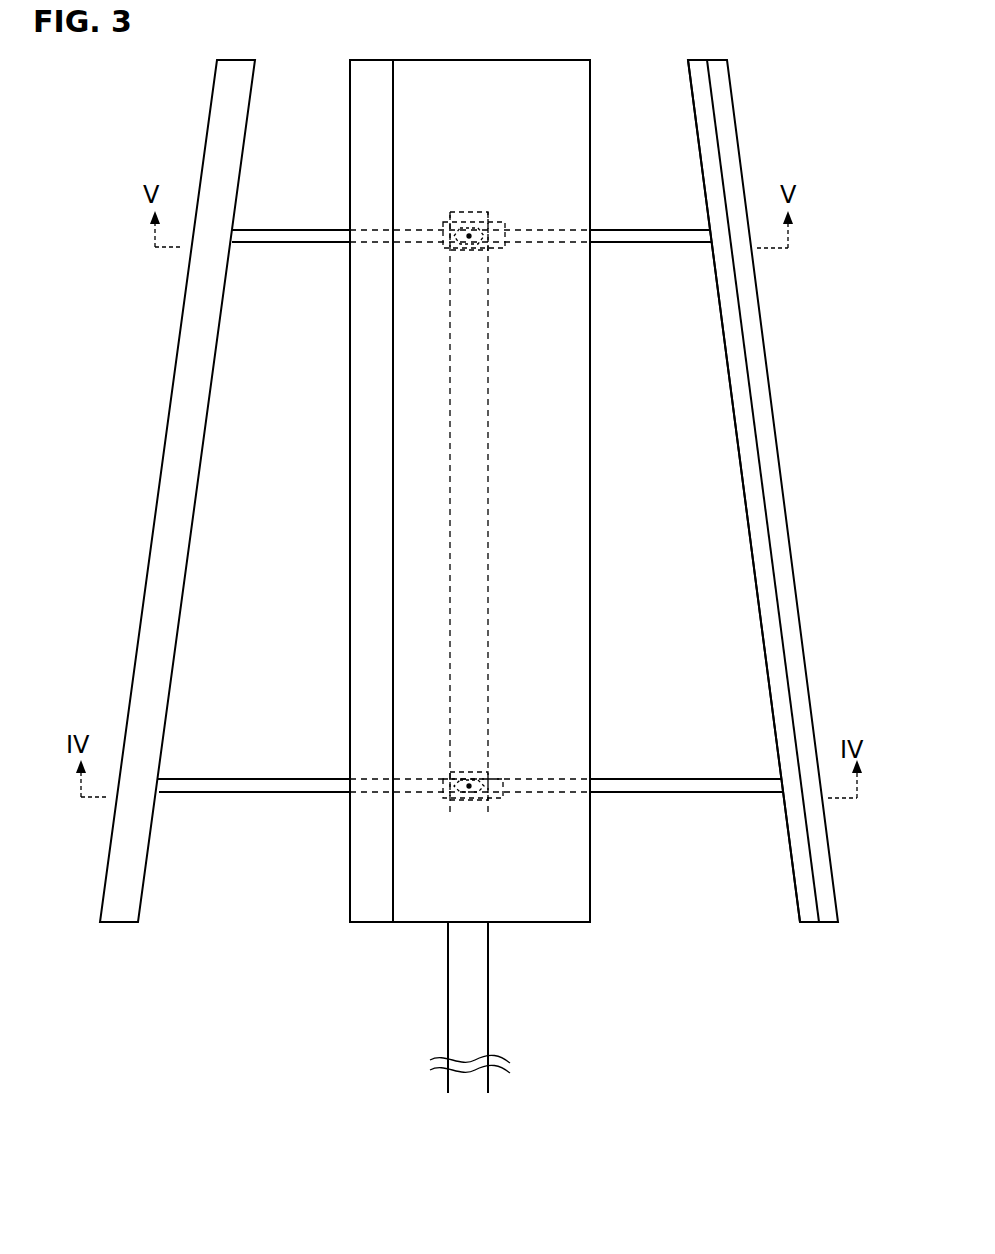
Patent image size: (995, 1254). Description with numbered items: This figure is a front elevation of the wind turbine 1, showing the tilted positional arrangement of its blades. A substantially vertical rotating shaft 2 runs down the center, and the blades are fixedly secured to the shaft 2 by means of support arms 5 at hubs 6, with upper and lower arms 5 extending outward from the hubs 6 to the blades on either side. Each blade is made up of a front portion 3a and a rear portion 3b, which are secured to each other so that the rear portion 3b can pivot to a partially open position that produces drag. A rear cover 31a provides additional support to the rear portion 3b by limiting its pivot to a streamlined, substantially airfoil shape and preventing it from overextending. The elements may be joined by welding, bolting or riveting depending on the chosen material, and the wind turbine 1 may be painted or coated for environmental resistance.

The wind turbine 1 is at (262, 990).
The rotating shaft 2 is at (478, 992).
The front portion 3a is at (225, 155).
The rear portion 3b is at (368, 563).
The rear cover 31a is at (412, 677).
The support arm 5 is at (273, 243).
The hub 6 is at (478, 212).